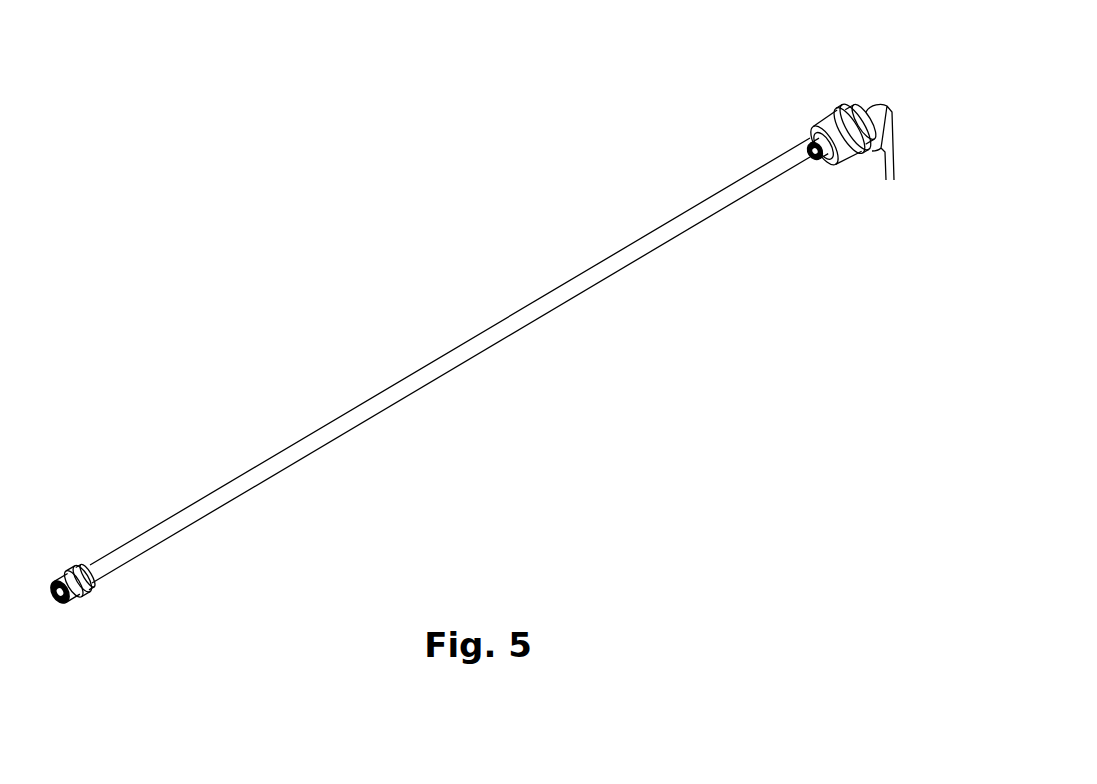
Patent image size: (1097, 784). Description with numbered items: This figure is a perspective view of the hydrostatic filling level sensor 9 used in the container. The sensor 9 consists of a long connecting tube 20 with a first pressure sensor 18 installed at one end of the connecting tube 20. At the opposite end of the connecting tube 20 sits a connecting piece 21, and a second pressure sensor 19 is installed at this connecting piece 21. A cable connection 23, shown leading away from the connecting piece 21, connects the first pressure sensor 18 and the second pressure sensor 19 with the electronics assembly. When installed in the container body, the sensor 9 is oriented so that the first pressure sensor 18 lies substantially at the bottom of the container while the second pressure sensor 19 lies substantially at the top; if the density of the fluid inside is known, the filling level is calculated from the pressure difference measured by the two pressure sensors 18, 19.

The hydrostatic filling level sensor 9 is at (418, 369).
The first pressure sensor 18 is at (55, 605).
The second pressure sensor 19 is at (813, 161).
The connecting tube 20 is at (600, 270).
The connecting piece 21 is at (832, 112).
The cable connection 23 is at (888, 178).